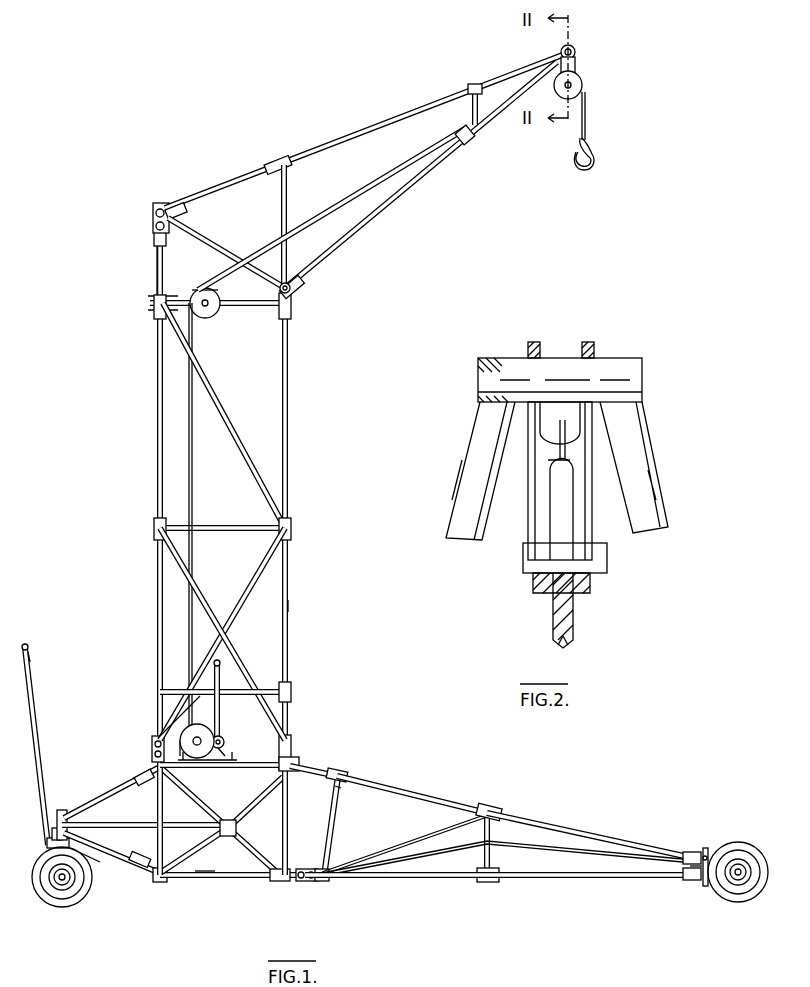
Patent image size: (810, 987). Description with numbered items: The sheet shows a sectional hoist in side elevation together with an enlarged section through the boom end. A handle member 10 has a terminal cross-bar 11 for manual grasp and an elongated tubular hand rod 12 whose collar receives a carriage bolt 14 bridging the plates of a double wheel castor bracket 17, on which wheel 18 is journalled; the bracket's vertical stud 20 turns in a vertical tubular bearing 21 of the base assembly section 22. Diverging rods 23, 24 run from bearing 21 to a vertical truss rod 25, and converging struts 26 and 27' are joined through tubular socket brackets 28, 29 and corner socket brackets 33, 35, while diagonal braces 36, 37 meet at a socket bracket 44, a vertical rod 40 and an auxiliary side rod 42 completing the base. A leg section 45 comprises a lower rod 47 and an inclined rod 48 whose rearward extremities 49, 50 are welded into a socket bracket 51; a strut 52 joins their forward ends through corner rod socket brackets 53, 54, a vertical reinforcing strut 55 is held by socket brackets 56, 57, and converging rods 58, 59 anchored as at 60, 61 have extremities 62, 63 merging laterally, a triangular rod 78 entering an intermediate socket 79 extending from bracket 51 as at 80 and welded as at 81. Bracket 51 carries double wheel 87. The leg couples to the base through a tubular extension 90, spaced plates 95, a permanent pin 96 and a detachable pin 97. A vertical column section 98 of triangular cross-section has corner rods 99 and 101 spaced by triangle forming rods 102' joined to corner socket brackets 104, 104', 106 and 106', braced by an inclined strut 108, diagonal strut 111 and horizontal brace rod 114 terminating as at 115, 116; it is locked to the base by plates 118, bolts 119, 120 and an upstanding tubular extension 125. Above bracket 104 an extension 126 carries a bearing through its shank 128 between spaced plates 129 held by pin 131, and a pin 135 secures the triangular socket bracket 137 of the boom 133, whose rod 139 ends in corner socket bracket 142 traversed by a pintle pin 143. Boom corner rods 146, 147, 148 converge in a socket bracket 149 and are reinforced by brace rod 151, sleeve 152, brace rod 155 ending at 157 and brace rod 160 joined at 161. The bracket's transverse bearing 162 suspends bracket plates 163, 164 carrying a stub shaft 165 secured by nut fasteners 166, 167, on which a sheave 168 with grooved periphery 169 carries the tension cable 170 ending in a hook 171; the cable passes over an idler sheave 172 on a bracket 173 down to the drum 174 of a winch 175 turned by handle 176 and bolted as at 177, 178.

In FIG. 1, the handle member 10 is at (44, 696).
In FIG. 1, the terminal cross-bar 11 is at (28, 642).
In FIG. 1, the elongated tubular hand rod 12 is at (33, 660).
In FIG. 1, the carriage bolt 14 is at (48, 846).
In FIG. 1, the double wheel castor bracket 17 is at (96, 855).
In FIG. 1, the wheel 18 is at (46, 895).
In FIG. 1, the vertically extending stud 20 is at (65, 812).
In FIG. 1, the vertical tubular bearing 21 is at (53, 833).
In FIG. 1, the base assembly section 22 is at (183, 880).
In FIG. 1, the diverging rod 23 is at (120, 788).
In FIG. 1, the diverging rod 24 is at (115, 860).
In FIG. 1, the vertical truss rod 25 is at (157, 854).
In FIG. 1, the upper converging strut 26 is at (294, 764).
In FIG. 1, the lower converging strut 27' is at (208, 894).
In FIG. 1, the welded tubular socket bracket 28 is at (148, 782).
In FIG. 1, the welded tubular socket bracket 29 is at (160, 882).
In FIG. 1, the corner socket bracket 33 is at (302, 770).
In FIG. 1, the corner socket bracket 35 is at (275, 880).
In FIG. 1, the diagonal truss rod brace 36 is at (262, 810).
In FIG. 1, the diagonal truss rod brace 37 is at (252, 855).
In FIG. 1, the vertical rod 40 is at (238, 835).
In FIG. 1, the auxiliary side rod 42 is at (112, 825).
In FIG. 1, the welded tubular socket bracket 44 is at (196, 855).
In FIG. 1, the leg section 45 is at (553, 882).
In FIG. 1, the horizontally disposed lower rod 47 is at (585, 878).
In FIG. 1, the inclined rod 48 is at (580, 833).
In FIG. 1, the rearward extremity 49 is at (690, 880).
In FIG. 1, the rearward extremity 50 is at (690, 854).
In FIG. 1, the socket bracket 51 is at (706, 850).
In FIG. 1, the strut 52 is at (331, 811).
In FIG. 1, the corner rod socket bracket 53 is at (327, 842).
In FIG. 1, the corner rod socket bracket 54 is at (342, 779).
In FIG. 1, the vertical reinforcing strut 55 is at (492, 843).
In FIG. 1, the rod socket bracket 56 is at (488, 882).
In FIG. 1, the rod socket bracket 57 is at (497, 812).
In FIG. 1, the converging rod 58 is at (402, 878).
In FIG. 1, the converging rod 59 is at (400, 798).
In FIG. 1, the anchoring point 60 is at (328, 878).
In FIG. 1, the anchoring point 61 is at (338, 784).
In FIG. 1, the rod extremity 62 is at (480, 876).
In FIG. 1, the rod extremity 63 is at (483, 808).
In FIG. 1, the triangular rod 78 is at (520, 838).
In FIG. 1, the intermediate socket 79 is at (708, 847).
In FIG. 1, the socket extension point 80 is at (698, 880).
In FIG. 1, the welded joinder 81 is at (682, 868).
In FIG. 1, the double wheel 87 is at (748, 888).
In FIG. 1, the tubular extension 90 is at (333, 788).
In FIG. 1, the spaced plates 95 is at (313, 880).
In FIG. 1, the permanently connected pin 96 is at (300, 880).
In FIG. 1, the pin or bolt 97 is at (306, 868).
In FIG. 1, the vertical column section 98 is at (299, 608).
In FIG. 1, the vertical strut 99 is at (158, 500).
In FIG. 1, the vertical strut 101 is at (290, 468).
In FIG. 1, the triangle forming rod 102' is at (216, 412).
In FIG. 1, the forward corner socket bracket 104 is at (132, 524).
In FIG. 1, the rod socket bracket 104' is at (141, 529).
In FIG. 1, the rearward corner socket bracket 106 is at (310, 531).
In FIG. 1, the rod socket bracket 106' is at (312, 529).
In FIG. 1, the inclined strut 108 is at (232, 415).
In FIG. 1, the intersecting diagonal strut 111 is at (238, 625).
In FIG. 1, the horizontal brace rod 114 is at (240, 690).
In FIG. 1, the brace rod terminus 115 is at (162, 690).
In FIG. 1, the brace rod terminus 116 is at (292, 694).
In FIG. 1, the space plates 118 is at (154, 747).
In FIG. 1, the bolt 119 is at (154, 742).
In FIG. 1, the bolt 120 is at (154, 764).
In FIG. 1, the upstanding tubular extension 125 is at (300, 768).
In FIG. 1, the upwardly directed extension 126 is at (158, 268).
In FIG. 1, the shank 128 is at (154, 238).
In FIG. 1, the spaced plate 129 is at (156, 213).
In FIG. 1, the pin 131 is at (156, 226).
In FIG. 1, the boom 133 is at (348, 135).
In FIG. 2, the boom 133 is at (667, 449).
In FIG. 1, the pin 135 is at (158, 206).
In FIG. 1, the triangular socket bracket 137 is at (178, 216).
In FIG. 1, the rod 139 is at (224, 250).
In FIG. 1, the corner socket bracket 142 is at (296, 283).
In FIG. 1, the pintle pin 143 is at (292, 291).
In FIG. 1, the boom corner rod 146 is at (420, 112).
In FIG. 2, the boom corner rod 146 is at (578, 436).
In FIG. 2, the boom corner rod 147 is at (668, 496).
In FIG. 1, the boom corner rod 148 is at (406, 188).
In FIG. 2, the boom corner rod 148 is at (466, 500).
In FIG. 1, the socket bracket 149 is at (575, 41).
In FIG. 2, the socket bracket 149 is at (607, 361).
In FIG. 1, the brace rod 151 is at (289, 202).
In FIG. 1, the sleeve 152 is at (281, 160).
In FIG. 1, the triangular brace rod 155 is at (366, 155).
In FIG. 1, the brace rod extremity 157 is at (466, 142).
In FIG. 1, the triangular brace rod 160 is at (476, 84).
In FIG. 1, the joinder point 161 is at (470, 90).
In FIG. 1, the transverse tubular bearing 162 is at (574, 52).
In FIG. 2, the transverse tubular bearing 162 is at (558, 365).
In FIG. 1, the bracket plate 163 is at (576, 68).
In FIG. 2, the bracket plate 163 is at (540, 492).
In FIG. 2, the bracket plate 164 is at (584, 490).
In FIG. 1, the transverse stub shaft 165 is at (580, 82).
In FIG. 2, the transverse stub shaft 165 is at (524, 568).
In FIG. 2, the nut fastener 166 is at (600, 574).
In FIG. 2, the nut fastener 167 is at (524, 554).
In FIG. 1, the sheave 168 is at (572, 88).
In FIG. 2, the sheave 168 is at (576, 610).
In FIG. 2, the grooved periphery 169 is at (565, 642).
In FIG. 1, the tension cable 170 is at (190, 440).
In FIG. 1, the hook 171 is at (596, 158).
In FIG. 1, the idler sheave 172 is at (210, 318).
In FIG. 1, the bracket 173 is at (178, 300).
In FIG. 1, the drum 174 is at (172, 706).
In FIG. 1, the winch 175 is at (230, 741).
In FIG. 1, the handle 176 is at (219, 698).
In FIG. 1, the bolt 177 is at (222, 763).
In FIG. 1, the bolt 178 is at (194, 797).